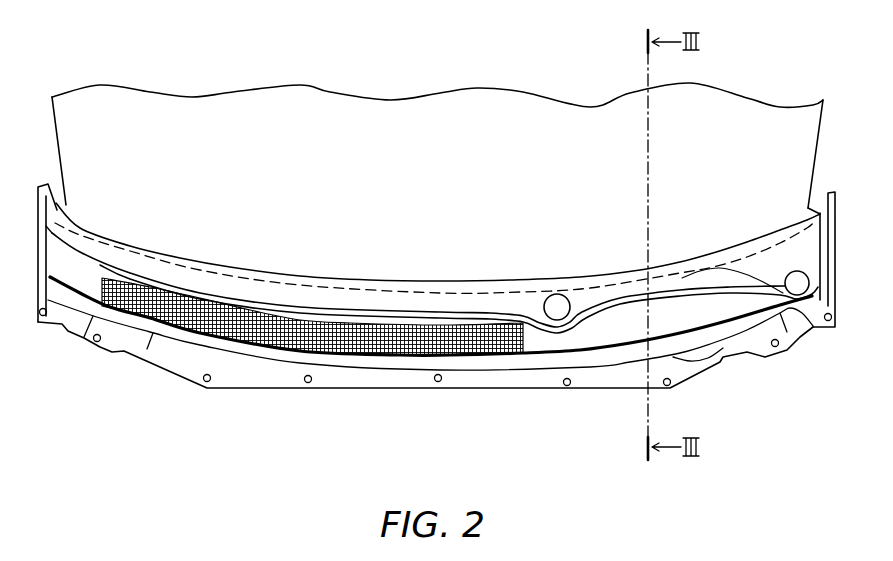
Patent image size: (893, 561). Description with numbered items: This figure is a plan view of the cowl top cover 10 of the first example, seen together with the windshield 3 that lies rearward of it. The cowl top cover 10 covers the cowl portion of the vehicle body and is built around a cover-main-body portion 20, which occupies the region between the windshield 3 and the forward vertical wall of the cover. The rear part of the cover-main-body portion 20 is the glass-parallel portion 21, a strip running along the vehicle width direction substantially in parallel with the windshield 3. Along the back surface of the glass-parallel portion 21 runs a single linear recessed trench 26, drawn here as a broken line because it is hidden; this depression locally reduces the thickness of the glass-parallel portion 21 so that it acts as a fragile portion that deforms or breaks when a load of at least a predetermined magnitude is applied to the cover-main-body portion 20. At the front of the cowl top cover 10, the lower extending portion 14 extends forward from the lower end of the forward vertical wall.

The windshield 3 is at (323, 112).
The cowl top cover 10 is at (738, 366).
The lower extending portion 14 is at (480, 382).
The cover-main-body portion 20 is at (613, 333).
The glass-parallel portion 21 is at (517, 282).
The recessed trench 26 is at (153, 265).